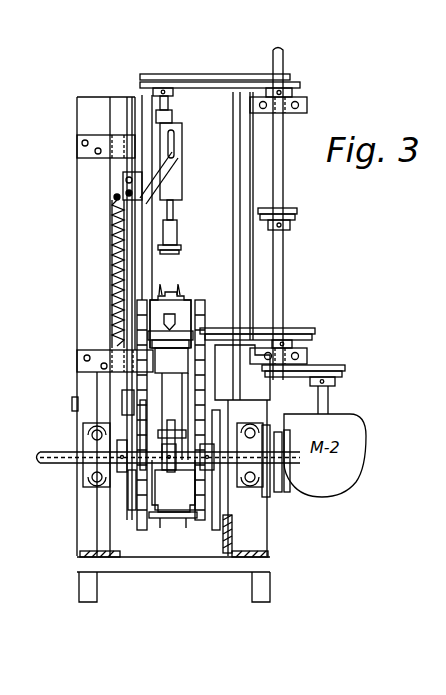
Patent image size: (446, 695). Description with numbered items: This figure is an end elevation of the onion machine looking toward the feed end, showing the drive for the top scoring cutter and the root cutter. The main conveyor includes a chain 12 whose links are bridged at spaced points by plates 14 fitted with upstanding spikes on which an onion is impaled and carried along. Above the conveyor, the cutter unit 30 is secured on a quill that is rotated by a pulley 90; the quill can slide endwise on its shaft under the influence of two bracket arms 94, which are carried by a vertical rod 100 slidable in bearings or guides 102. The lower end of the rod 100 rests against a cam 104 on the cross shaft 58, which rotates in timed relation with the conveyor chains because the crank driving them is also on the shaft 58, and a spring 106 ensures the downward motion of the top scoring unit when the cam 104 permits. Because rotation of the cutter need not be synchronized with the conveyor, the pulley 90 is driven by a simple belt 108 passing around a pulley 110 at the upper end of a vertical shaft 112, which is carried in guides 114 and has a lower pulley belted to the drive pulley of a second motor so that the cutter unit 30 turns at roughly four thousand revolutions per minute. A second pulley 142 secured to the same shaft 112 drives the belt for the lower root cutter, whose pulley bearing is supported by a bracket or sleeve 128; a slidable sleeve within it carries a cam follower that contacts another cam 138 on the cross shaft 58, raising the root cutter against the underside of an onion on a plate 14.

The conveyor chain 12 is at (205, 317).
The plate 14 is at (176, 296).
The cutter unit 30 is at (176, 239).
The cross shaft 58 is at (58, 436).
The pulley 90 is at (180, 75).
The bracket arms 94 is at (176, 164).
The vertical rod 100 is at (131, 268).
The bearings or guides 102 is at (80, 152).
The cam 104 is at (131, 505).
The spring 106 is at (110, 240).
The belt 108 is at (222, 81).
The pulley 110 is at (284, 76).
The vertical shaft 112 is at (287, 257).
The guides 114 is at (304, 104).
The bracket or sleeve 128 is at (182, 371).
The cam 138 is at (172, 470).
The pulley 142 is at (300, 330).